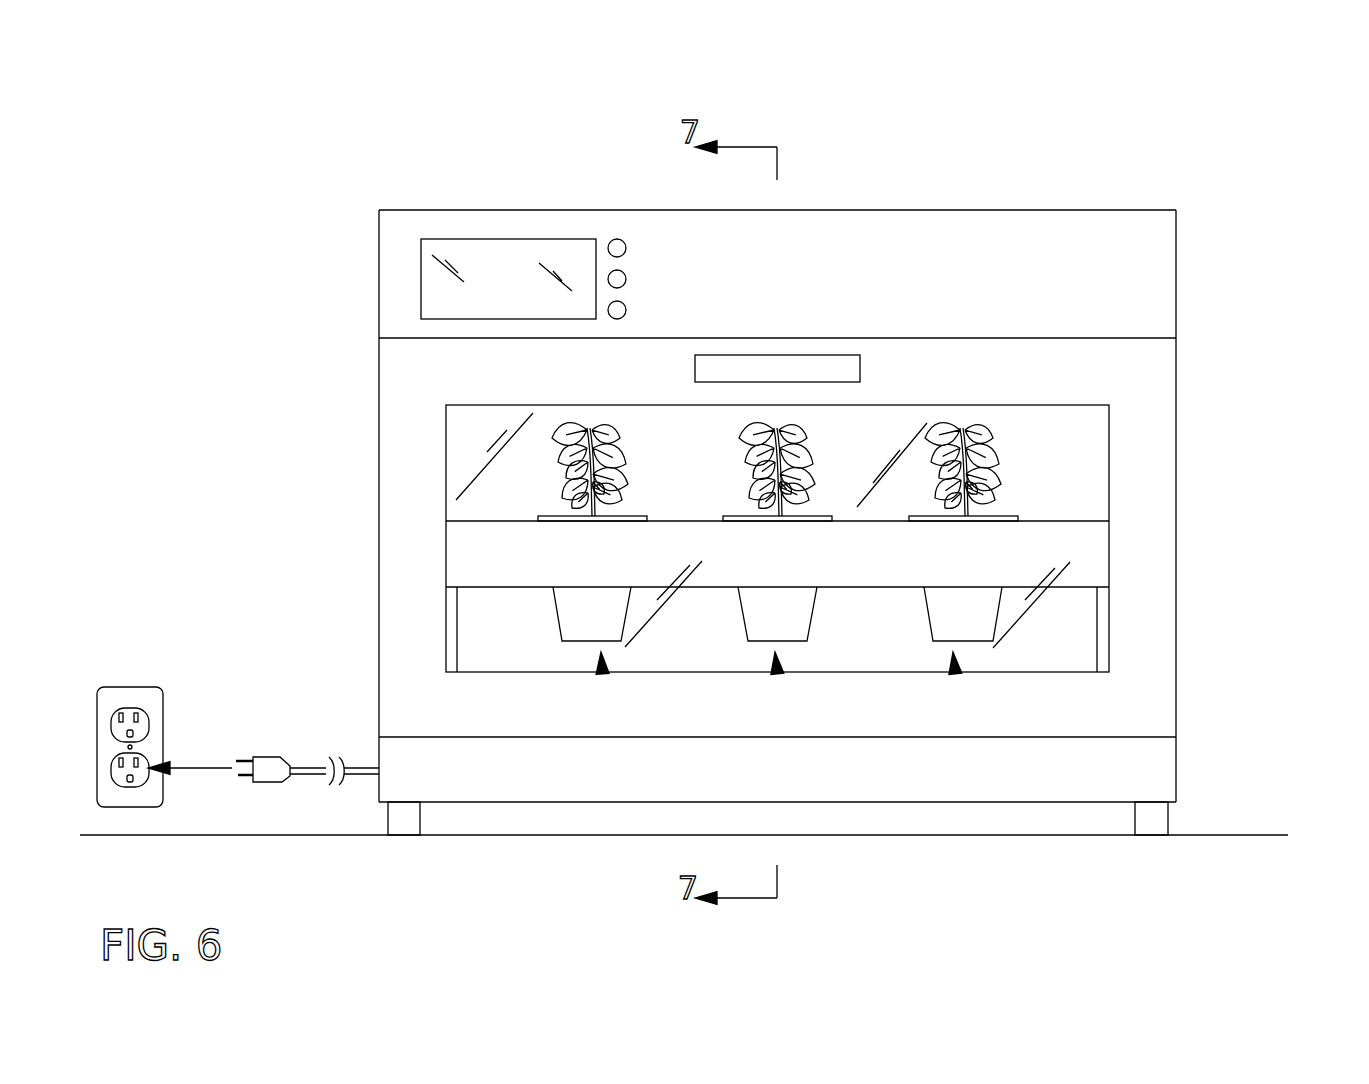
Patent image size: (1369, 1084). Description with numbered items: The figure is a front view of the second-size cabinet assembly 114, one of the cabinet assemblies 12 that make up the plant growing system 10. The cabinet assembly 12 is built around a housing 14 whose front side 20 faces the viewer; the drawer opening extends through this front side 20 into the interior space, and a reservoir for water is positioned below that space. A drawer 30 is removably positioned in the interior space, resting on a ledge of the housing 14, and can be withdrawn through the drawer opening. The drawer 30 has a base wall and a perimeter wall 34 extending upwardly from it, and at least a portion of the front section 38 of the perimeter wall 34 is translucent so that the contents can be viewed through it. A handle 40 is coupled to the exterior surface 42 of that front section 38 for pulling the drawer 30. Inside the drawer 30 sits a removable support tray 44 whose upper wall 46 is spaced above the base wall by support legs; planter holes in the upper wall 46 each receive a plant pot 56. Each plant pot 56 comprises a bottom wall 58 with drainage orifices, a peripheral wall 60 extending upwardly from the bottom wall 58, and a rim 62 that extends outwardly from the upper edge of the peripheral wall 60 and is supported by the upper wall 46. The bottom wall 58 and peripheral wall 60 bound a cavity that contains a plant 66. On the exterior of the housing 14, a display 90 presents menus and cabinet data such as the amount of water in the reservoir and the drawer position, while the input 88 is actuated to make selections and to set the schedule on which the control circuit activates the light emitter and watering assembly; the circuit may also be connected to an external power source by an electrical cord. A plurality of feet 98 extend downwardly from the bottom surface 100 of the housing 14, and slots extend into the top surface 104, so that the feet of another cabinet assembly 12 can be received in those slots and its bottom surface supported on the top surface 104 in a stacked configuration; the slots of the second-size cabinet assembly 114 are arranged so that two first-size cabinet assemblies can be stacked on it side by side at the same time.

The plant growing system 10 is at (1110, 133).
The cabinet assembly 12 is at (1193, 260).
The housing 14 is at (1210, 767).
The front side 20 is at (1000, 240).
The drawer 30 is at (1213, 422).
The perimeter wall 34 is at (1135, 618).
The front section 38 is at (1145, 377).
The handle 40 is at (810, 363).
The exterior surface 42 is at (1038, 375).
The support tray 44 is at (477, 548).
The upper wall 46 is at (270, 758).
The plant pot 56 is at (603, 675).
The bottom wall 58 is at (575, 641).
The peripheral wall 60 is at (574, 612).
The rim 62 is at (548, 512).
The plant 66 is at (562, 430).
The input 88 is at (640, 263).
The display 90 is at (460, 267).
The feet 98 is at (403, 823).
The bottom surface 100 is at (677, 803).
The top surface 104 is at (845, 210).
The second-size cabinet assembly 114 is at (1170, 187).